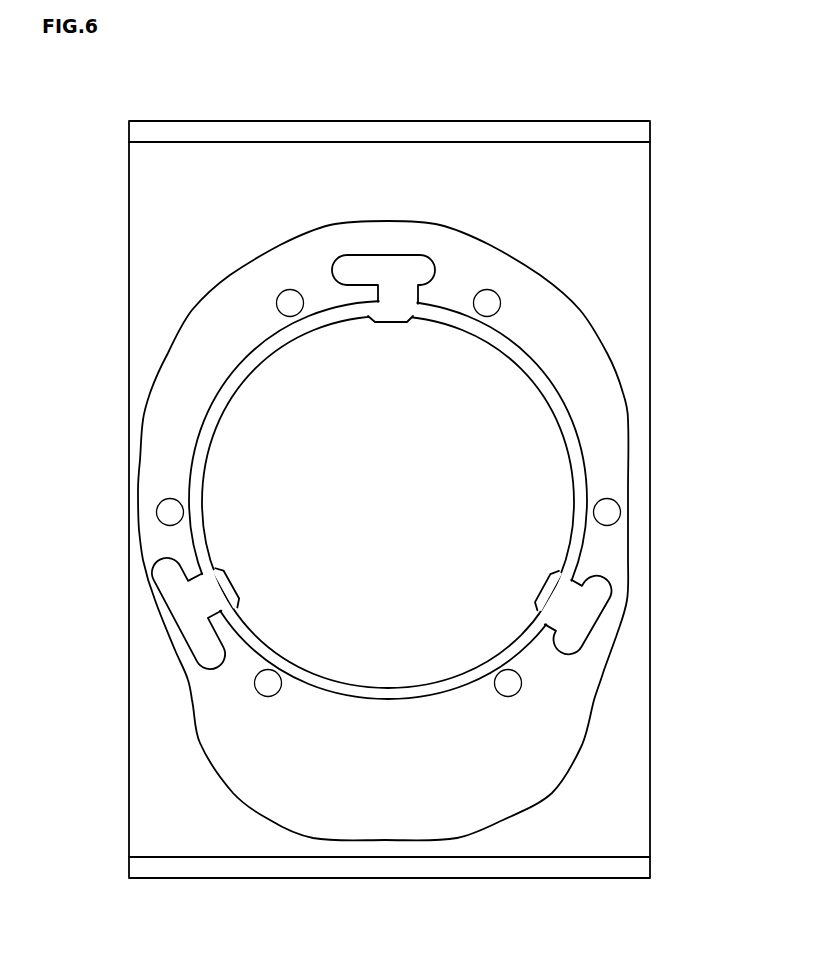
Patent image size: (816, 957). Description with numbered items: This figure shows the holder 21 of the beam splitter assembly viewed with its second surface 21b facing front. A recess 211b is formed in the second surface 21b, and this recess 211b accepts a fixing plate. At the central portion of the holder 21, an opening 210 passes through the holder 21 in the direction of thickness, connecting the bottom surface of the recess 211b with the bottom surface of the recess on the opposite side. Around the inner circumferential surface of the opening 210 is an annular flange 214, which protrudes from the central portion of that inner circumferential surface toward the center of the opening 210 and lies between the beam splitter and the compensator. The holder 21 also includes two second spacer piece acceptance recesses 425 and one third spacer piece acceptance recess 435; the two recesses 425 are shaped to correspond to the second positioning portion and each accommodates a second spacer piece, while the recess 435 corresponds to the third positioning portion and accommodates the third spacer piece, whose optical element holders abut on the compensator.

The holder 21 is at (551, 102).
The second surface 21b is at (632, 816).
The recess 211b is at (589, 327).
The opening 210 is at (585, 469).
The flange 214 is at (252, 363).
The second spacer piece acceptance recess 425 is at (392, 268).
The third spacer piece acceptance recess 435 is at (188, 612).